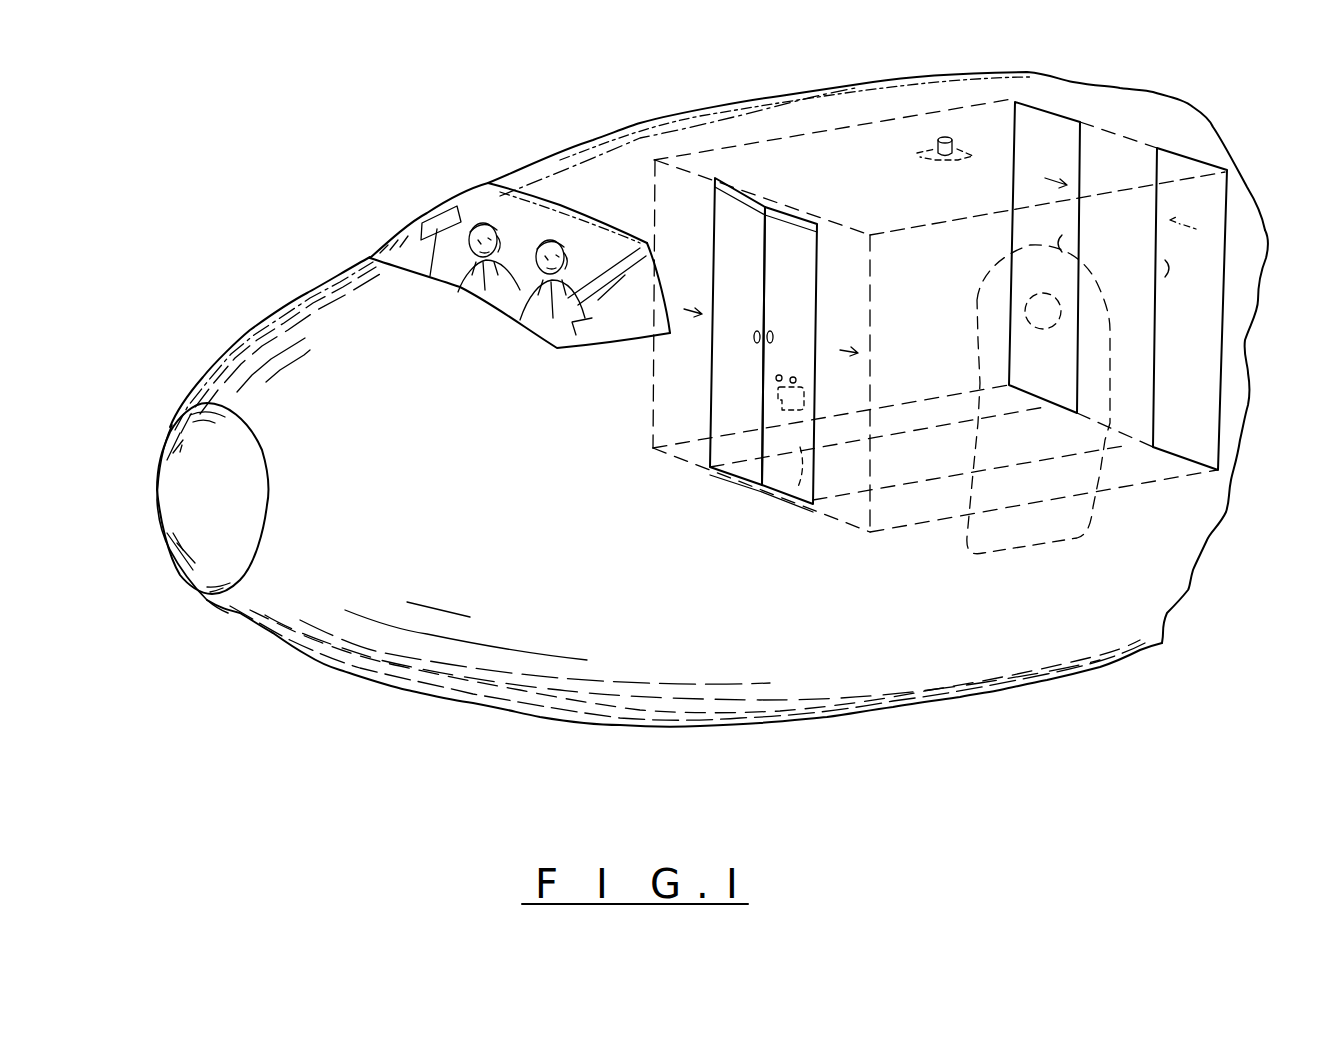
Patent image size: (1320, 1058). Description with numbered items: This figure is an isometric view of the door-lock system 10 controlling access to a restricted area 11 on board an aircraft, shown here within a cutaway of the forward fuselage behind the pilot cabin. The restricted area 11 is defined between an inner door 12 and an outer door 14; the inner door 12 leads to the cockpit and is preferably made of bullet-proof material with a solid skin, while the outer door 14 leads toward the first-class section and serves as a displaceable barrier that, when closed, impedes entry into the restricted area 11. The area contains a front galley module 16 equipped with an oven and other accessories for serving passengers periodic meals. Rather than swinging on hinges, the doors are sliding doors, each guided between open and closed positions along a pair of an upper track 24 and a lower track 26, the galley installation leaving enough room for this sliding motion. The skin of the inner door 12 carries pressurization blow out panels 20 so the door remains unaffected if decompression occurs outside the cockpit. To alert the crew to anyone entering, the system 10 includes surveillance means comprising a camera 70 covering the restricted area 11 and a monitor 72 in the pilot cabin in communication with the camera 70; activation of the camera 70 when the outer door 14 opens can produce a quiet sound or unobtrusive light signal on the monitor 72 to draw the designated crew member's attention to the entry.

The door-lock system 10 is at (880, 560).
The restricted area 11 is at (916, 298).
The inner door 12 is at (797, 477).
The outer door 14 is at (1210, 273).
The front galley module 16 is at (865, 111).
The pressurization blow out panels 20 is at (776, 412).
The upper track 24 is at (1123, 137).
The lower track 26 is at (740, 483).
The camera 70 is at (963, 162).
The monitor 72 is at (429, 272).